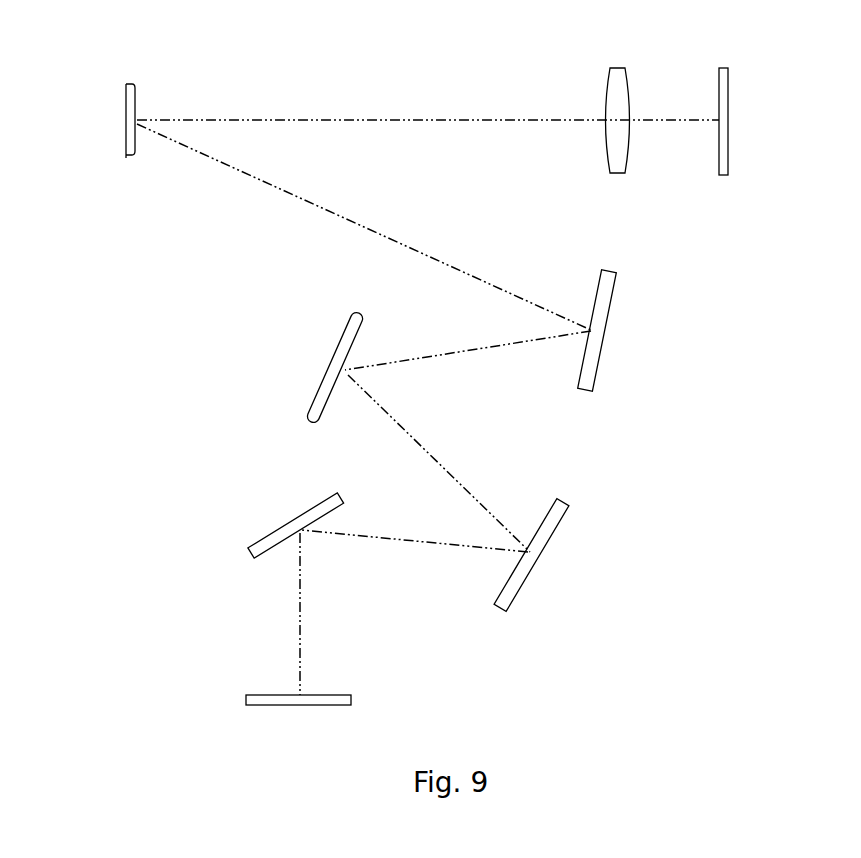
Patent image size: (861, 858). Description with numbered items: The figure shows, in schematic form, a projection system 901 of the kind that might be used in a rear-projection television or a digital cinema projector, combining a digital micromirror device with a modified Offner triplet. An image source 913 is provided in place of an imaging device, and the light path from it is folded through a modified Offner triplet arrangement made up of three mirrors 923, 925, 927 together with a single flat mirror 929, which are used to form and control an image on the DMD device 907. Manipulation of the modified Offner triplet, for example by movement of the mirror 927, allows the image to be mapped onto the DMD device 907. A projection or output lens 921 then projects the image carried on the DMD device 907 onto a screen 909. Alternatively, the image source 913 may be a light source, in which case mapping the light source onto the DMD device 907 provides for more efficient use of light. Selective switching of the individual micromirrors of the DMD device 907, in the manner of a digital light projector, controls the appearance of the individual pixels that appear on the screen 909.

The projection system 901 is at (318, 73).
The DMD device 907 is at (124, 132).
The screen 909 is at (724, 103).
The image source 913 is at (294, 697).
The projection or output lens 921 is at (613, 98).
The mirror of modified Offner triplet 923 is at (611, 305).
The mirror of modified Offner triplet 925 is at (338, 385).
The mirror of modified Offner triplet 927 is at (553, 516).
The single flat mirror 929 is at (295, 522).